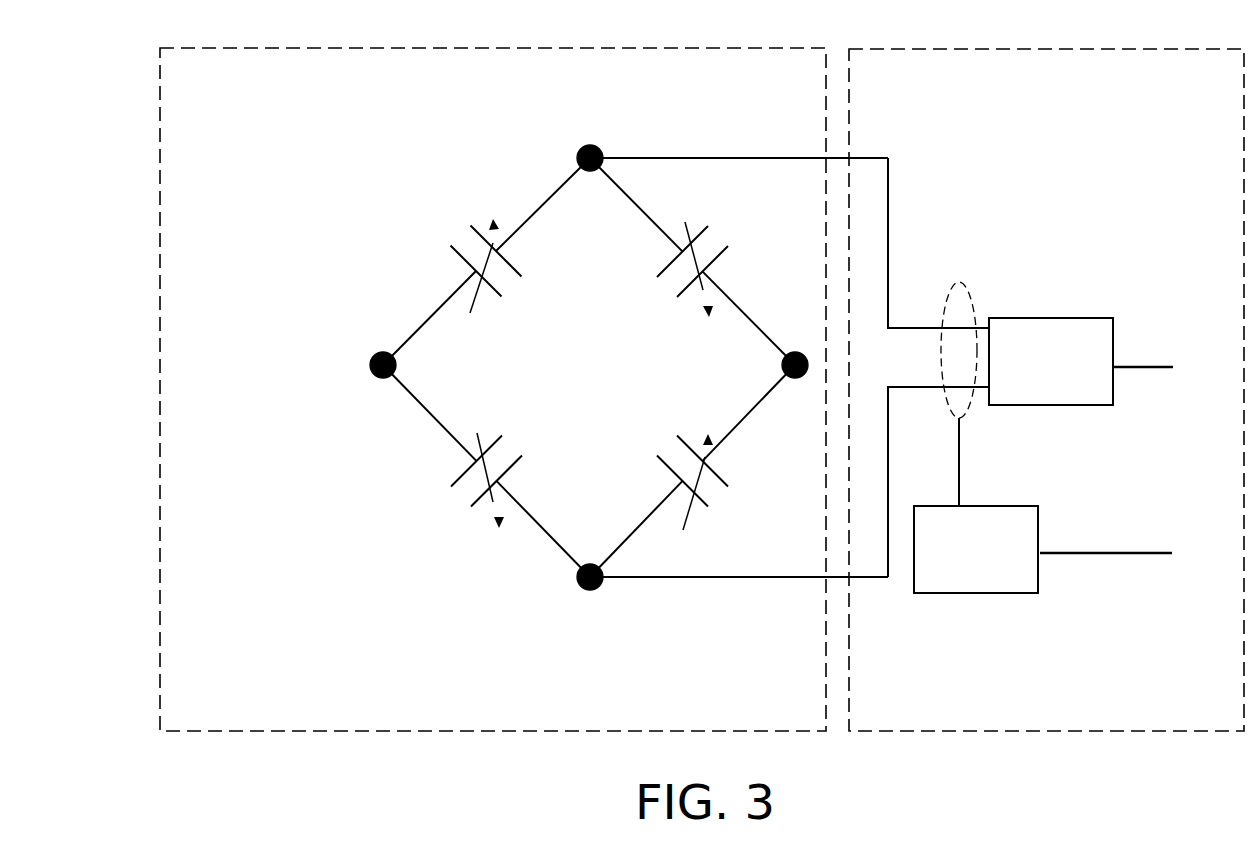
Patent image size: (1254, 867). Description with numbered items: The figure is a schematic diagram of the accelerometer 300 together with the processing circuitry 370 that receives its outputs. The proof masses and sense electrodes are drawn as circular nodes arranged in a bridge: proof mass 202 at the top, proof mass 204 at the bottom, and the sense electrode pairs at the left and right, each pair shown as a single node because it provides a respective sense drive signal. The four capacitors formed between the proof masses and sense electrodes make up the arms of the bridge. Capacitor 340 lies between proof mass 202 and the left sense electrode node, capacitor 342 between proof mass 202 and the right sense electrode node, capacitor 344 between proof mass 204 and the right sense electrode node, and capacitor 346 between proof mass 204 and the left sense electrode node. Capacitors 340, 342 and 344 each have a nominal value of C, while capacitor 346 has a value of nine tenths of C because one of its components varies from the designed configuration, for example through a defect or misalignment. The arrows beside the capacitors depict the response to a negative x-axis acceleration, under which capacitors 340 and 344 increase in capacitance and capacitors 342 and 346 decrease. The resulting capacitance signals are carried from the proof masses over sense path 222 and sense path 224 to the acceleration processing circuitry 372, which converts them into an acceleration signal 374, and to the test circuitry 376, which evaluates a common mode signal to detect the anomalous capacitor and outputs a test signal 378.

The accelerometer 300 is at (270, 48).
The processing circuitry 370 is at (1037, 48).
The proof mass 202 is at (577, 160).
The proof mass 204 is at (580, 578).
The sense path 222 is at (710, 158).
The sense path 224 is at (717, 577).
The capacitor 340 is at (466, 231).
The capacitor 342 is at (727, 247).
The capacitor 344 is at (690, 487).
The capacitor 346 is at (460, 478).
The acceleration processing circuitry 372 is at (1010, 318).
The acceleration signal 374 is at (1142, 363).
The test circuitry 376 is at (1003, 505).
The test signal 378 is at (1142, 553).